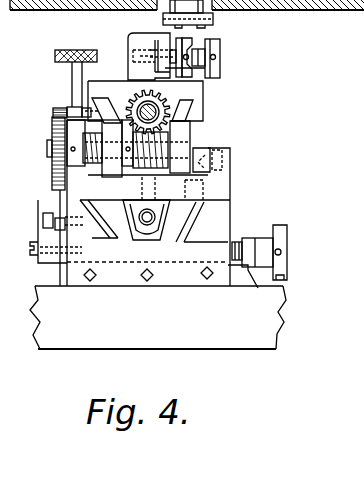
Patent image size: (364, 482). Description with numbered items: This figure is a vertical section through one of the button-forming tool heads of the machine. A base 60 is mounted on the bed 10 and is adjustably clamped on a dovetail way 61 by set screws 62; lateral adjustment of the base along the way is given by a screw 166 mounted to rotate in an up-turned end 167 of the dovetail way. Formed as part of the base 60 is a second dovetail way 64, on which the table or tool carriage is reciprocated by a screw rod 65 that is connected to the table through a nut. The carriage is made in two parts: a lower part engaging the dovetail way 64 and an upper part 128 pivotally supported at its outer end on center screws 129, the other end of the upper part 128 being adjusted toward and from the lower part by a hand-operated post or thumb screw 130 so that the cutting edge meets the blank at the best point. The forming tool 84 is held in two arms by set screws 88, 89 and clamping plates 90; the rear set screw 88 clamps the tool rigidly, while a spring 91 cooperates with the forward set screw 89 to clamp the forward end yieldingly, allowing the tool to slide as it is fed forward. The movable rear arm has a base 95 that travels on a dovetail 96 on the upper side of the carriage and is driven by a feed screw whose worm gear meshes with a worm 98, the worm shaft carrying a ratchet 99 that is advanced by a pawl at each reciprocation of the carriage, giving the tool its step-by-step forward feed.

The bed 10 is at (247, 340).
The base 60 is at (192, 255).
The dovetail way 61 is at (237, 282).
The set screws 62 is at (146, 278).
The dovetail way 64 is at (190, 212).
The screw rod 65 is at (217, 190).
The tool 84 is at (148, 37).
The set screw 88 is at (193, 75).
The set screw 89 is at (222, 47).
The clamping plates 90 is at (200, 70).
The spring 91 is at (192, 47).
The base 95 is at (190, 112).
The dovetail 96 is at (205, 93).
The worm 98 is at (150, 150).
The ratchet 99 is at (55, 130).
The upper part 128 is at (200, 147).
The center screws 129 is at (225, 163).
The thumb screw 130 is at (75, 82).
The screw 166 is at (240, 240).
The up-turned end 167 is at (250, 259).